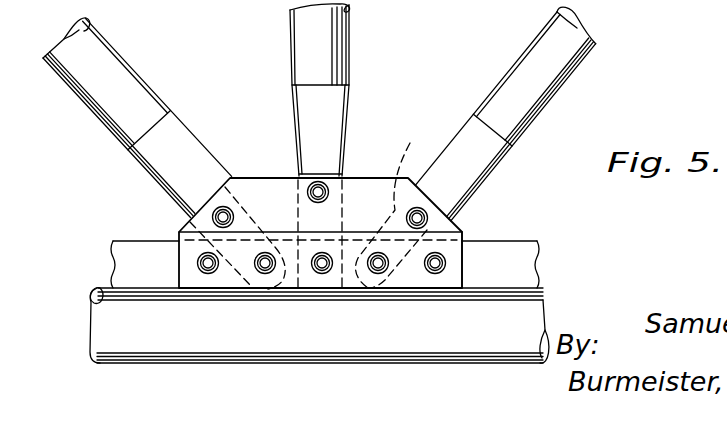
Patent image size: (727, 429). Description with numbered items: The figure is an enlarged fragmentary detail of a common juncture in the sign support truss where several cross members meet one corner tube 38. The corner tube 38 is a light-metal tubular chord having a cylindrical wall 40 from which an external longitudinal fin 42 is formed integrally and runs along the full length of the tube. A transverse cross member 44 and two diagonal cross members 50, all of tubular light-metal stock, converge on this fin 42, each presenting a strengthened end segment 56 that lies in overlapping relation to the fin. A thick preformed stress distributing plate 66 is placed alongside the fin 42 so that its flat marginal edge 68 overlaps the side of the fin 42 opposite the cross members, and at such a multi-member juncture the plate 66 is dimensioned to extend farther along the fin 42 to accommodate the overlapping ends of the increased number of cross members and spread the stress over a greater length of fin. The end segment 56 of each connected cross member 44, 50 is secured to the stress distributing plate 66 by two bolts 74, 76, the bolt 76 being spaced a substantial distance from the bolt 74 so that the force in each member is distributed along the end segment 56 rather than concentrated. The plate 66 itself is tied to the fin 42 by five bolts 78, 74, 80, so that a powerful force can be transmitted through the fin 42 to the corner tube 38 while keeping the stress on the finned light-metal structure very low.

The corner tube 38 is at (120, 364).
The cylindrical wall 40 is at (102, 292).
The fin 42 is at (522, 253).
The cross member 44 is at (345, 49).
The diagonal cross member 50 is at (151, 100).
The end segment 56 is at (297, 200).
The stress distributing plate 66 is at (374, 178).
The flat marginal edge 68 is at (453, 247).
The bolt 74 is at (322, 273).
The second bolt 76 is at (319, 188).
The additional bolt 78 is at (206, 274).
The additional bolt 80 is at (437, 273).